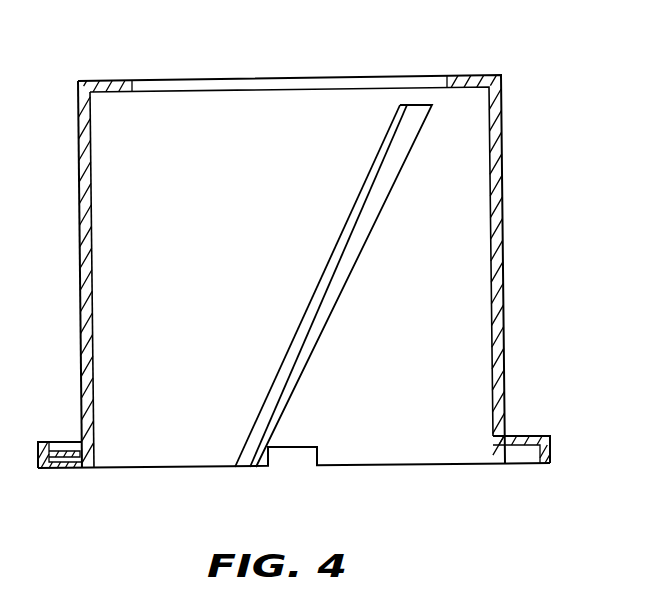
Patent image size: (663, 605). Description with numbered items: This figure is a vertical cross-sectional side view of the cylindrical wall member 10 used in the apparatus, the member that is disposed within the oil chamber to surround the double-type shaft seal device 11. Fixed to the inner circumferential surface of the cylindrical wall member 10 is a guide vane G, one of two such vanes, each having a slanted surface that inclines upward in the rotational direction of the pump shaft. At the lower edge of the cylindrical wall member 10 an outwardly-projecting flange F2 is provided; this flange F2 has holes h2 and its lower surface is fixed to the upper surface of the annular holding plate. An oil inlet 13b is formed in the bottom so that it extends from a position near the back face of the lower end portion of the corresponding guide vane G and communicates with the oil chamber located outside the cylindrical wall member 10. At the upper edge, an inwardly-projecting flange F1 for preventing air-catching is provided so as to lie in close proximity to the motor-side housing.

The cylindrical wall member 10 is at (503, 217).
The double-type shaft seal device 11 is at (392, 309).
The oil inlet 13b is at (290, 457).
The inwardly-projecting flange F1 is at (470, 76).
The outwardly-projecting flange F2 is at (522, 436).
The hole h2 is at (56, 439).
The guide vane G is at (324, 275).